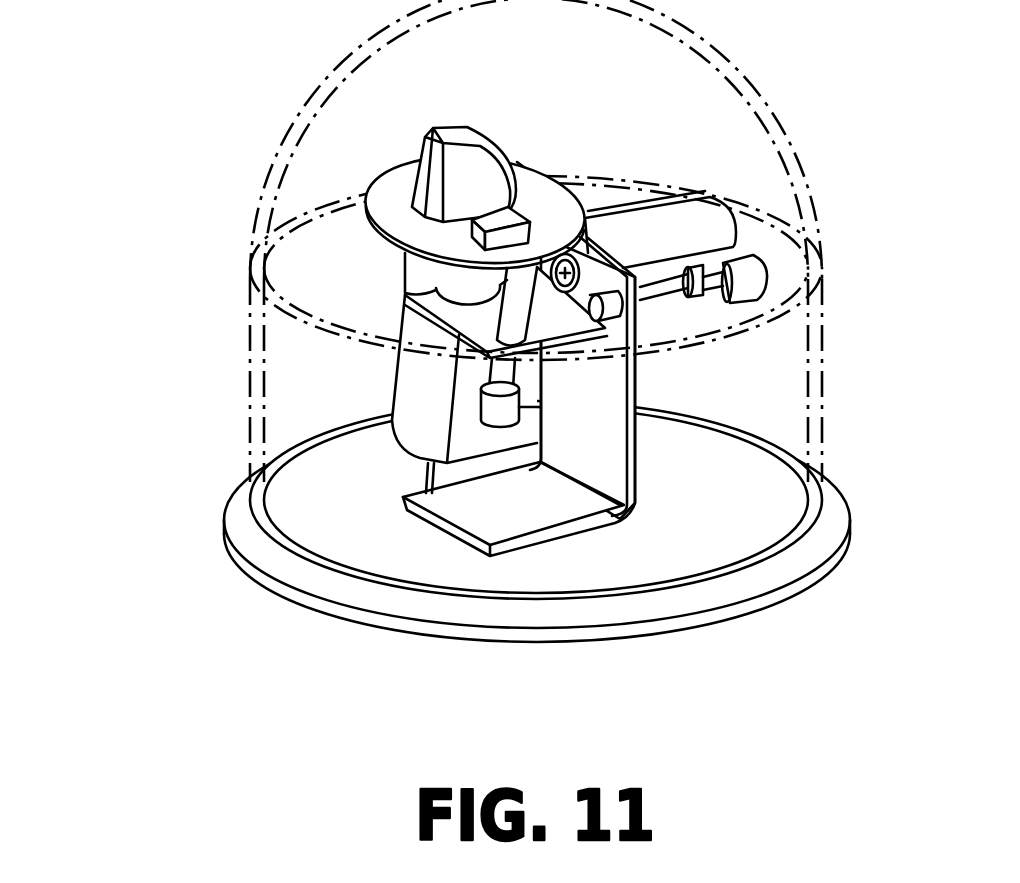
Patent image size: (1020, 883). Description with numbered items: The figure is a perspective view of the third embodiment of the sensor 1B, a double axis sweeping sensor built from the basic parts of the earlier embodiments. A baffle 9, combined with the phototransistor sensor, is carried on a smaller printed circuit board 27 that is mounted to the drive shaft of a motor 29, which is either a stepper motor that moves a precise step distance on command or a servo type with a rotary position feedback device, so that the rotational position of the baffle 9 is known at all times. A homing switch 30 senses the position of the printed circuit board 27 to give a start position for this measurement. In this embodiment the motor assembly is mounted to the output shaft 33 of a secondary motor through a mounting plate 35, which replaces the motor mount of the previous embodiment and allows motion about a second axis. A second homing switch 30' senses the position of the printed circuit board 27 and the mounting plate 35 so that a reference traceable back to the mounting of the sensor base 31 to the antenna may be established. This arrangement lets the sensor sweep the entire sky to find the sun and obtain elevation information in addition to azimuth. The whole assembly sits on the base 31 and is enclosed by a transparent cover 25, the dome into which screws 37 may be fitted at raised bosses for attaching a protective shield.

The sensor 1B is at (190, 472).
The baffle 9 is at (458, 135).
The transparent cover 25 is at (240, 322).
The printed circuit board 27 is at (395, 226).
The motor 29 is at (400, 368).
The homing switch 30 is at (468, 350).
The second homing switch 30' is at (712, 326).
The base 31 is at (260, 583).
The output shaft 33 is at (572, 277).
The mounting plate 35 is at (622, 465).
The screws 37 is at (680, 207).